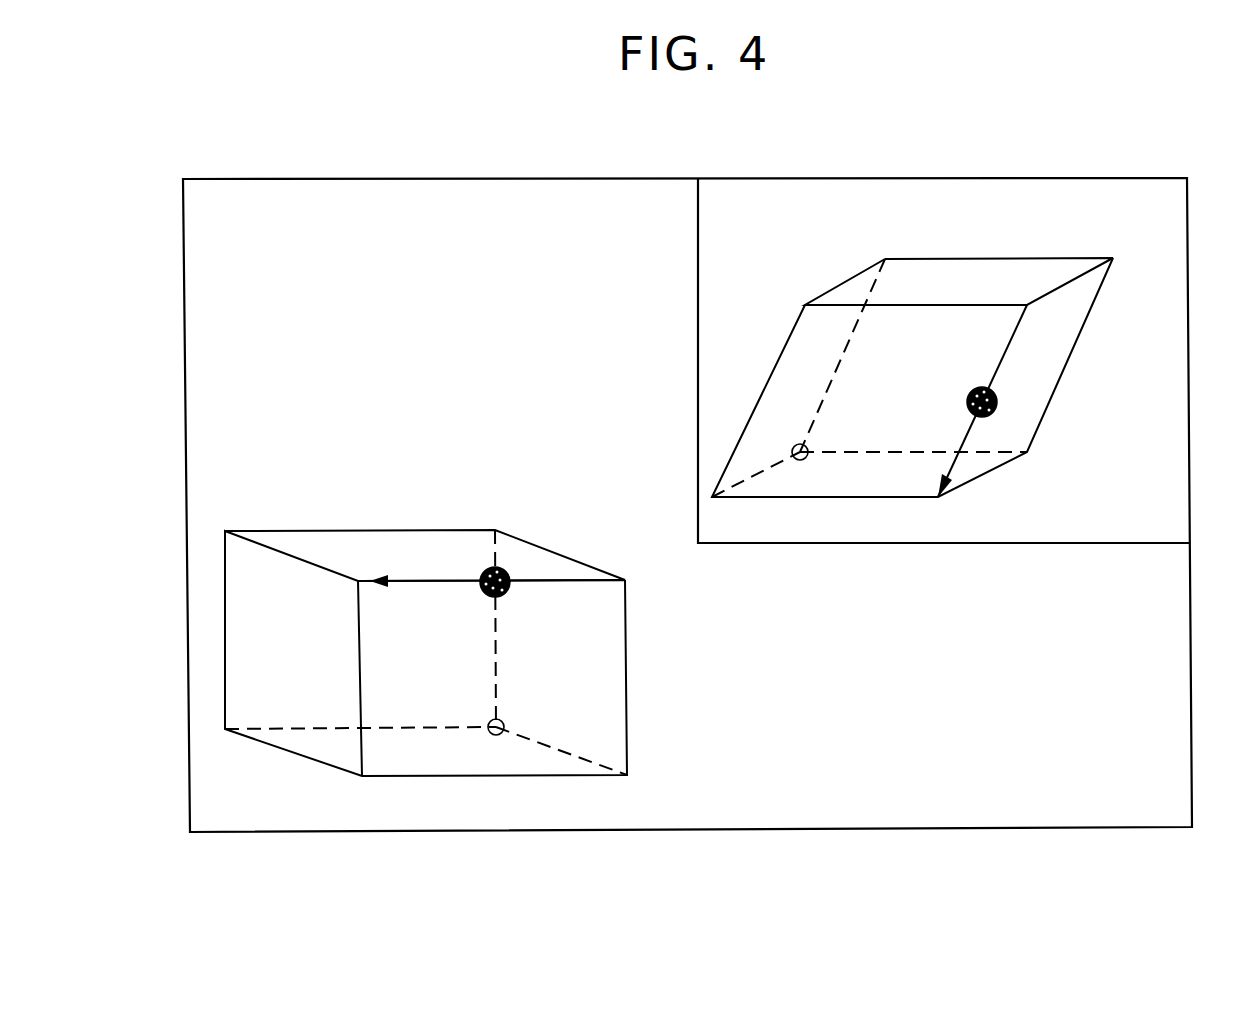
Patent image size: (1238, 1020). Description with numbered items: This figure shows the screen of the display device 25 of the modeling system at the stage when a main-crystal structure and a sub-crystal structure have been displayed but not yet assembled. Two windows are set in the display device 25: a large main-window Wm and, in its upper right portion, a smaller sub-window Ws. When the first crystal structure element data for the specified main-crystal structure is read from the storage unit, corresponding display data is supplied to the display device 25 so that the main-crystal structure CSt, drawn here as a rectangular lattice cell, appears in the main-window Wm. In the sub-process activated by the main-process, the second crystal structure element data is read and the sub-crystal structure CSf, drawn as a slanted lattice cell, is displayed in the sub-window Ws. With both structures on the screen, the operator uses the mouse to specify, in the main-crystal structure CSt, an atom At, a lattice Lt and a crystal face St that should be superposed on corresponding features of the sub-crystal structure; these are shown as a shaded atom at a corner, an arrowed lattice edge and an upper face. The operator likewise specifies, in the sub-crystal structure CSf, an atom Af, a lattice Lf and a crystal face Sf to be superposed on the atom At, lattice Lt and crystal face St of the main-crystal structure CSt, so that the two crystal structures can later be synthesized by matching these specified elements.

The display device 25 is at (262, 853).
The main-window Wm is at (977, 817).
The sub-window Ws is at (757, 188).
The crystal face St is at (409, 547).
The lattice Lt is at (448, 583).
The atom At is at (504, 572).
The main-crystal structure CSt is at (652, 690).
The crystal face Sf is at (1056, 387).
The lattice Lf is at (1013, 337).
The atom Af is at (967, 403).
The sub-crystal structure CSf is at (1024, 235).